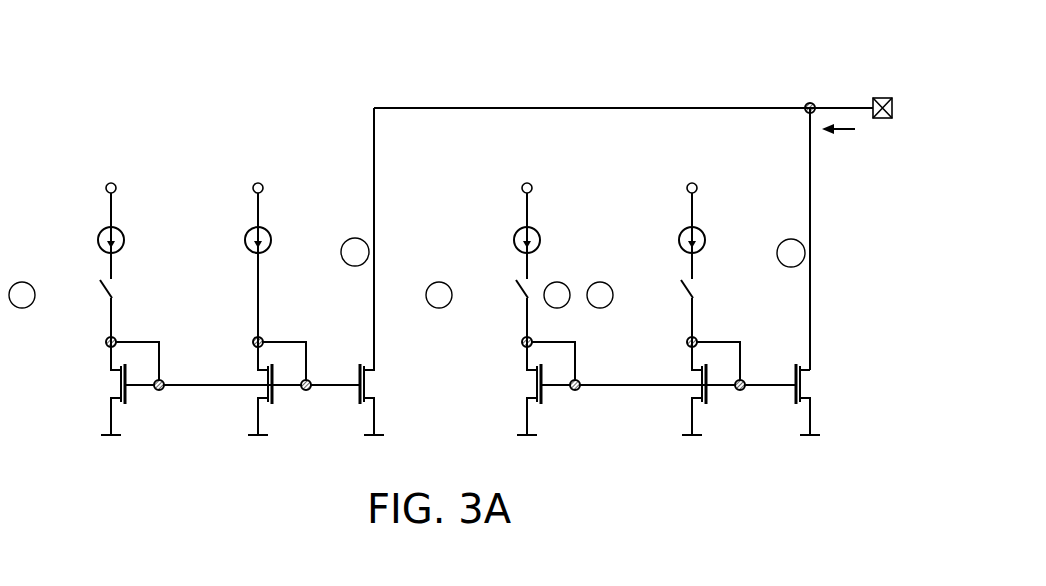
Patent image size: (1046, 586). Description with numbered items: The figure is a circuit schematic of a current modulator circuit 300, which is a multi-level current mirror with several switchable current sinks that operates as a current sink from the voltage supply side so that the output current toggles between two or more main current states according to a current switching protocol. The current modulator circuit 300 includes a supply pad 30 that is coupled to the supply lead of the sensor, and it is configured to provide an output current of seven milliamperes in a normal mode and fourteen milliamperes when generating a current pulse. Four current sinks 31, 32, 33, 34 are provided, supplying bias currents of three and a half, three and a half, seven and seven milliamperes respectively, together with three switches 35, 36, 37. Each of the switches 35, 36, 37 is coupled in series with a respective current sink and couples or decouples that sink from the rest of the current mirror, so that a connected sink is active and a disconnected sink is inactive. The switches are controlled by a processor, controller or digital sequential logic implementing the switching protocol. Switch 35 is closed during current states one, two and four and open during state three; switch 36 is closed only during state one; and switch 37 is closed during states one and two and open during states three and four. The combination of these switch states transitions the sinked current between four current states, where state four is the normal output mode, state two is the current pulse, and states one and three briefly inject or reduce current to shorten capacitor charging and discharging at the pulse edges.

The current modulator circuit 300 is at (115, 39).
The supply pad 30 is at (882, 96).
The first current sink 31 is at (122, 232).
The second current sink 32 is at (269, 232).
The third current sink 33 is at (538, 232).
The fourth current sink 34 is at (703, 232).
The first switch 35 is at (101, 305).
The second switch 36 is at (517, 305).
The third switch 37 is at (682, 305).